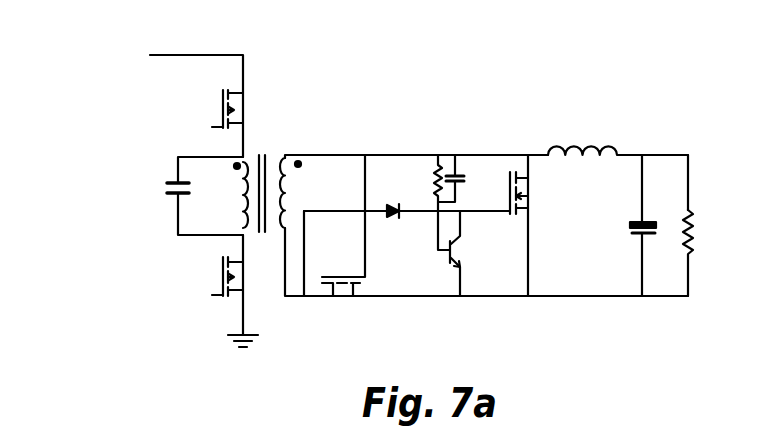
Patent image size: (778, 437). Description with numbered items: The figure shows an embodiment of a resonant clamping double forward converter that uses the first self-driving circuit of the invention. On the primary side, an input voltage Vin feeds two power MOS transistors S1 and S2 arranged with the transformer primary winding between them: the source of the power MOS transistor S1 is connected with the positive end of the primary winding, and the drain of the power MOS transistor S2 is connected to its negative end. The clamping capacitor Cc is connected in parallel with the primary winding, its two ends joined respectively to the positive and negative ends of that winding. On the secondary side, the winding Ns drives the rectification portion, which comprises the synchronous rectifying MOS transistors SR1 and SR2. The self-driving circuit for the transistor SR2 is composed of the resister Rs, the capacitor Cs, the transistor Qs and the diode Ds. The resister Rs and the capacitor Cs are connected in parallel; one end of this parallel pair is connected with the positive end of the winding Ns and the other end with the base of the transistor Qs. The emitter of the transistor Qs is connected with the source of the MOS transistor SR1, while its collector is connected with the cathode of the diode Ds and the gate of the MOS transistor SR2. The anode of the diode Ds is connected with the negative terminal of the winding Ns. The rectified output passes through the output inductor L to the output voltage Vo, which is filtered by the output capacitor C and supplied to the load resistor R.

The input voltage Vin is at (196, 61).
The power MOS transistor S1 is at (213, 123).
The power MOS transistor S2 is at (221, 291).
The capacitor Cc is at (185, 196).
The winding Ns is at (484, 225).
The synchronous rectifying MOS transistor SR1 is at (334, 242).
The synchronous rectifying MOS transistor SR2 is at (546, 225).
The diode Ds is at (407, 229).
The resister Rs is at (423, 178).
The capacitor Cs is at (465, 178).
The transistor Qs is at (465, 249).
The output inductor L is at (618, 134).
The output voltage Vo is at (688, 168).
The output capacitor C is at (630, 225).
The load resistor R is at (700, 253).